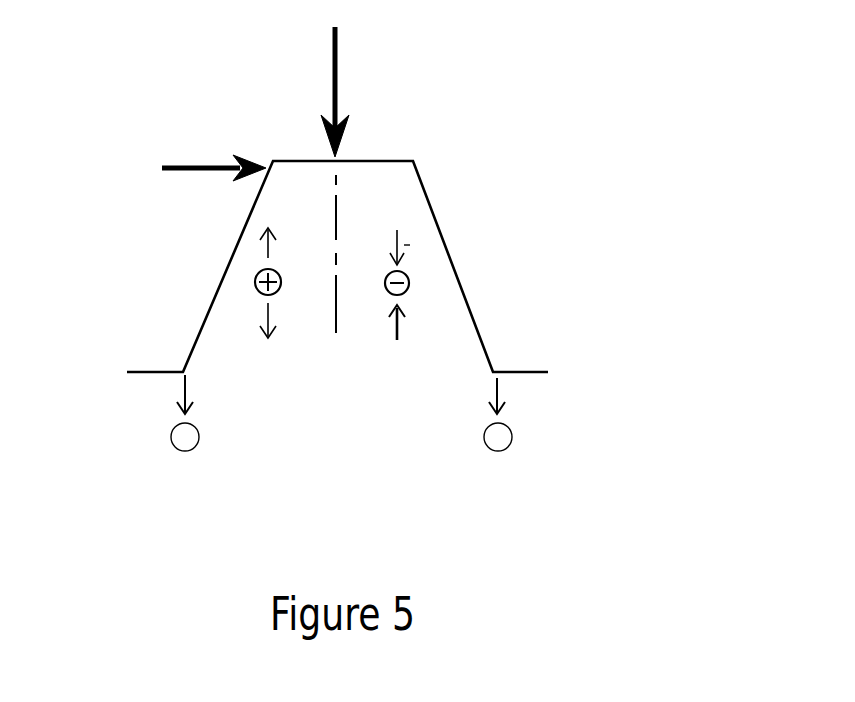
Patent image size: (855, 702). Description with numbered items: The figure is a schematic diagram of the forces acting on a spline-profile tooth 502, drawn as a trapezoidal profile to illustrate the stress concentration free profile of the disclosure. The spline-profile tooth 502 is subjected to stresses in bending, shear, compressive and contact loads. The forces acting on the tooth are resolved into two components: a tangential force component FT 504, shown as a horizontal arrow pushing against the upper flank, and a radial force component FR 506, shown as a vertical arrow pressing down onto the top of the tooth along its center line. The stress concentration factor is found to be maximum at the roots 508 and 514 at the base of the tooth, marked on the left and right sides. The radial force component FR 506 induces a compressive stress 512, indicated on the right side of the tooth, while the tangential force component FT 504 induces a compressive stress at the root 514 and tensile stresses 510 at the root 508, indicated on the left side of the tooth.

The spline-profile tooth 502 is at (435, 207).
The tangential force component FT 504 is at (173, 140).
The radial force component FR 506 is at (292, 65).
The root 508 is at (193, 450).
The tensile stresses 510 is at (255, 281).
The compressive stress 512 is at (420, 282).
The root 514 is at (500, 452).